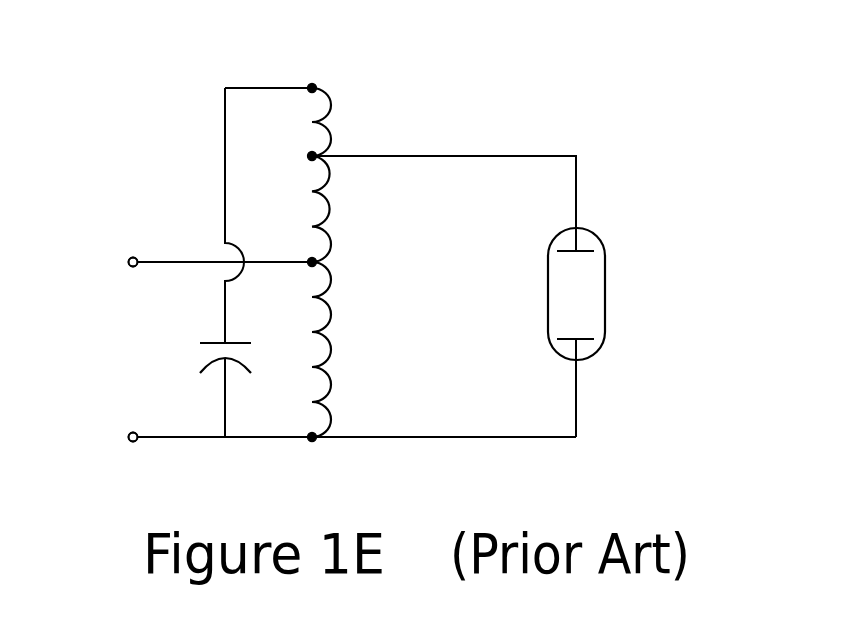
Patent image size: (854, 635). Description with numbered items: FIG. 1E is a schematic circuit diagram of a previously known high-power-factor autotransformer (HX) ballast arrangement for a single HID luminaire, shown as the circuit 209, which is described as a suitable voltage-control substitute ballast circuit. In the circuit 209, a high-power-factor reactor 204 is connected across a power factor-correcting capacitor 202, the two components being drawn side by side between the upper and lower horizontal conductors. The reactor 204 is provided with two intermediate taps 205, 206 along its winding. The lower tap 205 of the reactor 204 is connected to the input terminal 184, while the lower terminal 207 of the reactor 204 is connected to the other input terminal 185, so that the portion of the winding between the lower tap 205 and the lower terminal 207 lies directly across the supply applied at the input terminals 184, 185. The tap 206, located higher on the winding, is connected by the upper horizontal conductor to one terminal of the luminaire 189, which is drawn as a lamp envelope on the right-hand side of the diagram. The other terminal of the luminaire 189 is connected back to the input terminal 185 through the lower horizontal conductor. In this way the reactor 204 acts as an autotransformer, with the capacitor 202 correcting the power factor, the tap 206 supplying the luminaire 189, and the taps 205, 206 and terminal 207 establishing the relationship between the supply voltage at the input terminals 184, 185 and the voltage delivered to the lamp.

The input terminal 184 is at (100, 265).
The input terminal 185 is at (100, 438).
The power factor-correcting capacitor 202 is at (207, 353).
The high-power-factor reactor 204 is at (333, 76).
The lower tap 205 is at (318, 261).
The tap 206 is at (313, 153).
The lower terminal 207 is at (318, 436).
The luminaire 189 is at (605, 293).
The circuit 209 is at (617, 168).